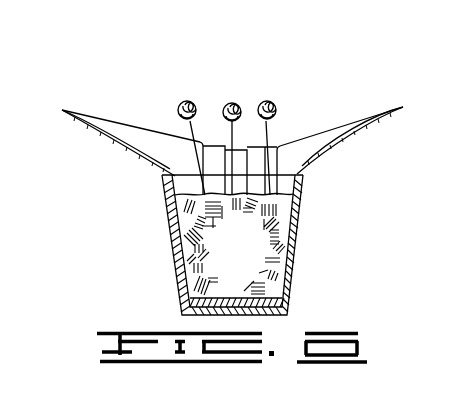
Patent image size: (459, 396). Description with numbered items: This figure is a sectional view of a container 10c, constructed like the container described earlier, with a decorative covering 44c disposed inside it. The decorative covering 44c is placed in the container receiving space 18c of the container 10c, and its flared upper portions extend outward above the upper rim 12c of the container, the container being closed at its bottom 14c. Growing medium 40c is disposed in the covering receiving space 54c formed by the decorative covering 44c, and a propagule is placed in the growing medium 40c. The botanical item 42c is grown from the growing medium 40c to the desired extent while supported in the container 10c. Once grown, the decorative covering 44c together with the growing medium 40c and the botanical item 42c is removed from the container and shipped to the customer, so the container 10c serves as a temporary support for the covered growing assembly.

The container 10c is at (172, 258).
The upper end / rim of pot 12c is at (165, 172).
The bottom of pot 14c is at (187, 310).
The container receiving space 18c is at (177, 182).
The growing medium 40c is at (276, 247).
The botanical item 42c is at (243, 90).
The decorative covering 44c is at (98, 138).
The covering receiving space 54c is at (282, 177).